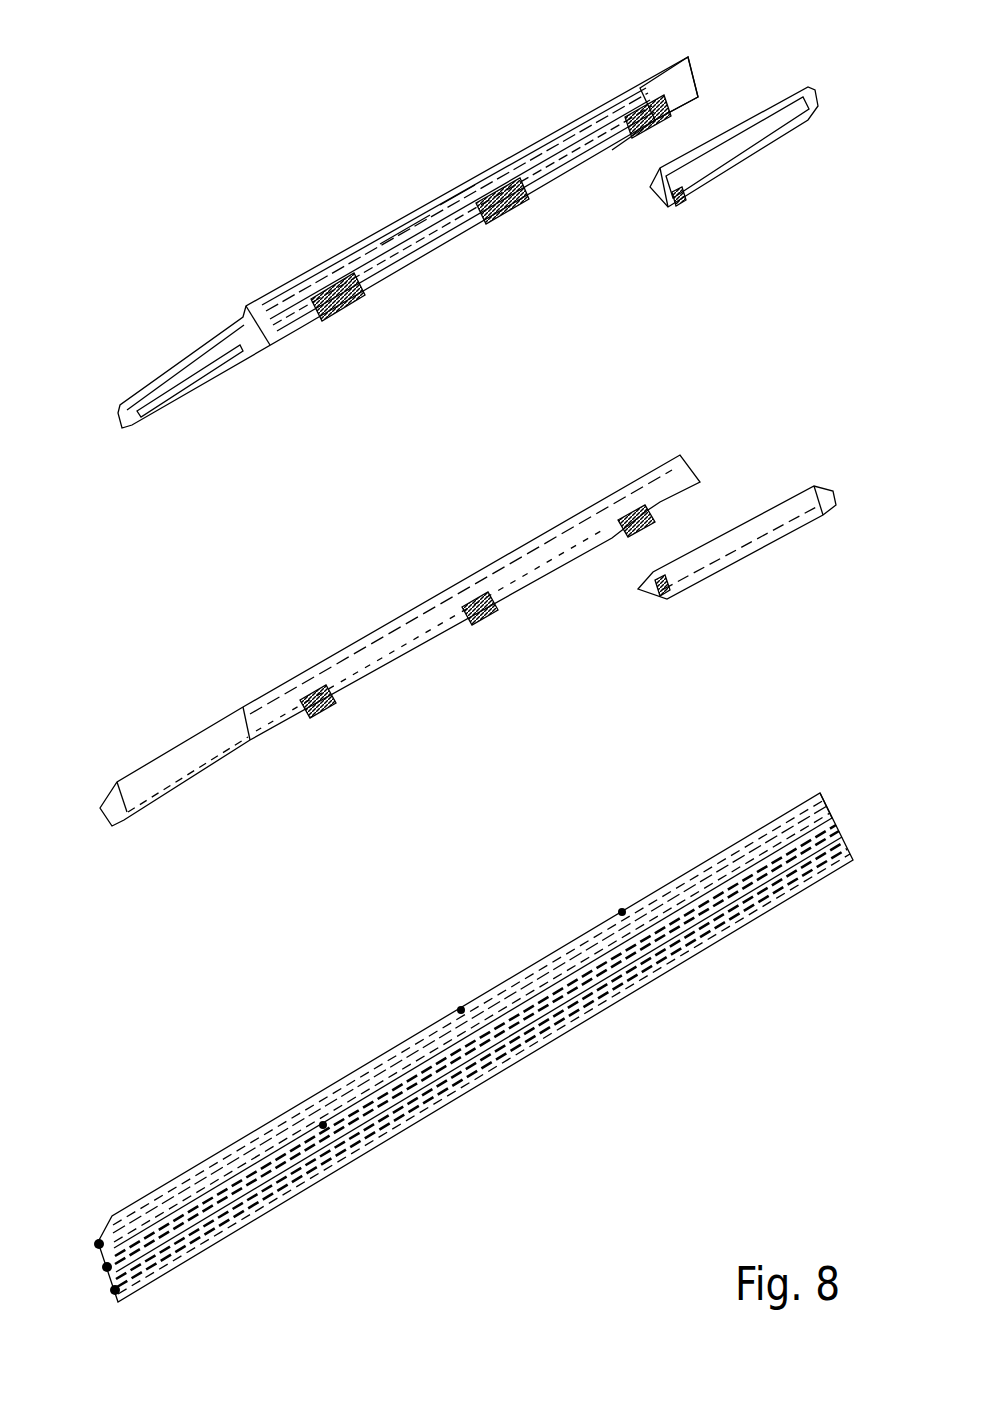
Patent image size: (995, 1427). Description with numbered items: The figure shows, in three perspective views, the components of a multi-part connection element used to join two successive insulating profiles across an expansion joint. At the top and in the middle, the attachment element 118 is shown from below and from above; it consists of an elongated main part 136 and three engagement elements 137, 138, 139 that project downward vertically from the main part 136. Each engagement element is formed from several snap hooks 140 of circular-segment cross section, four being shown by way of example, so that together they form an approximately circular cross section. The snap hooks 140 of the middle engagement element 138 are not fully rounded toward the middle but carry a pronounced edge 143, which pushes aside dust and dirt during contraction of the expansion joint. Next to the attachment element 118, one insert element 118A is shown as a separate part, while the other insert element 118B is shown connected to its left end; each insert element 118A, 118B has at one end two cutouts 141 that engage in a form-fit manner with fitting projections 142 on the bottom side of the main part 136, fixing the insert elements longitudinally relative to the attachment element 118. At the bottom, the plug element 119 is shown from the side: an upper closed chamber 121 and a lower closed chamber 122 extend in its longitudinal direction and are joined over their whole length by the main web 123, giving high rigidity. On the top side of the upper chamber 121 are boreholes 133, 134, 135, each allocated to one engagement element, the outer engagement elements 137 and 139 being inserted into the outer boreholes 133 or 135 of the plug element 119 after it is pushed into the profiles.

The attachment element 118 is at (291, 168).
The insert element 118A is at (769, 443).
The insert element 118B is at (163, 450).
The plug element 119 is at (473, 1050).
The upper closed chamber 121 is at (96, 1244).
The lower closed chamber 122 is at (118, 1289).
The main web 123 is at (109, 1266).
The borehole 133 is at (325, 1126).
The borehole 134 is at (463, 1012).
The borehole 135 is at (624, 914).
The main part 136 is at (403, 240).
The engagement element 137 is at (351, 339).
The engagement element 138 is at (507, 279).
The engagement element 139 is at (636, 167).
The snap hook 140 is at (622, 112).
The cutout 141 is at (678, 203).
The fitting projection 142 is at (690, 58).
The pronounced edge 143 is at (458, 195).